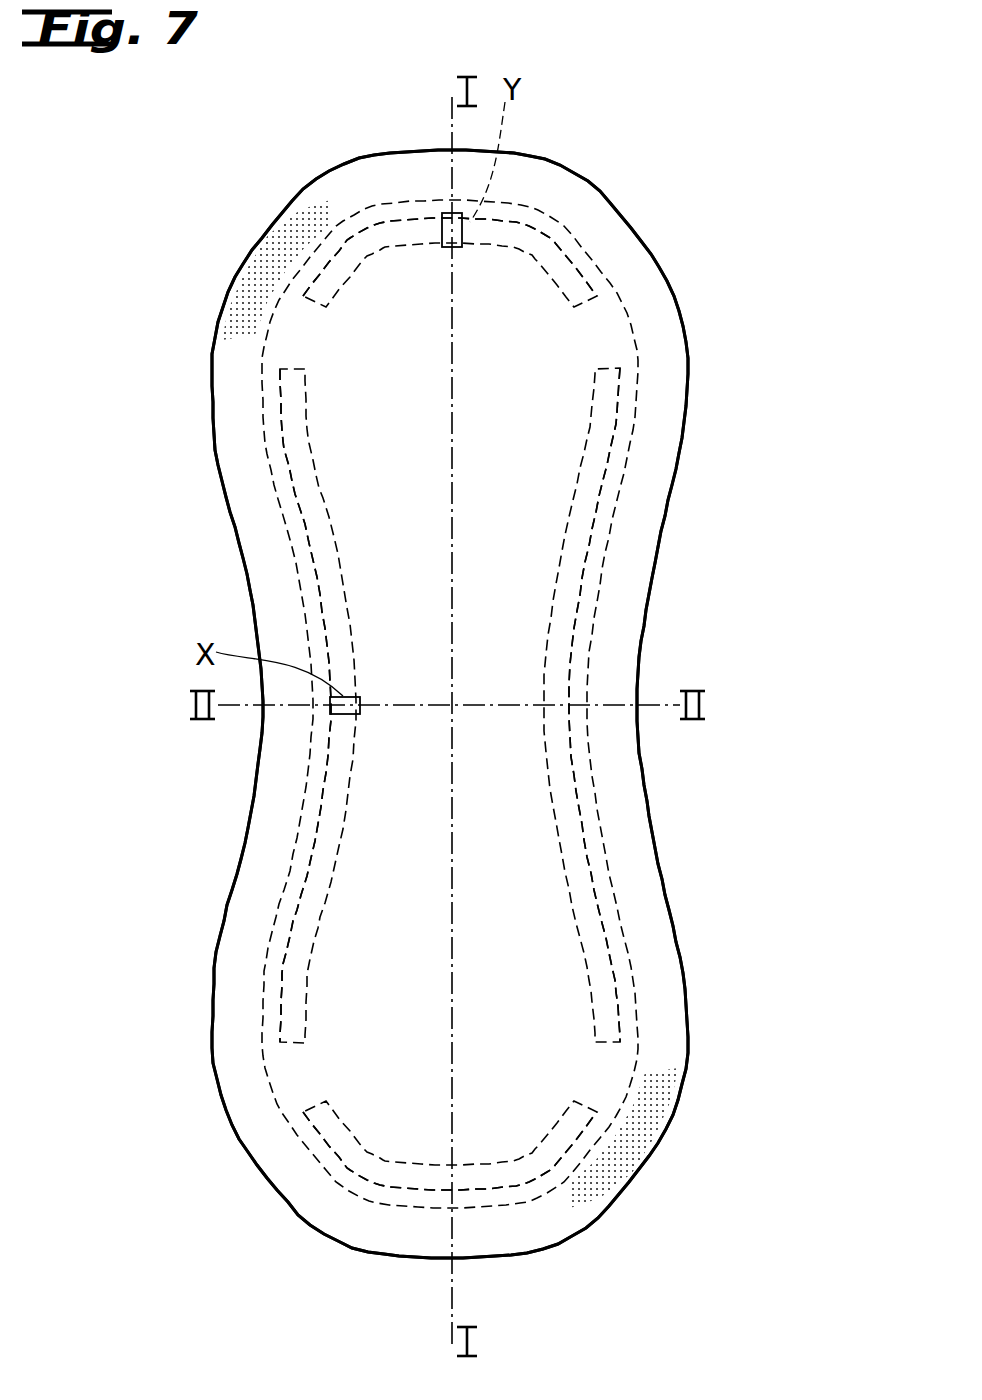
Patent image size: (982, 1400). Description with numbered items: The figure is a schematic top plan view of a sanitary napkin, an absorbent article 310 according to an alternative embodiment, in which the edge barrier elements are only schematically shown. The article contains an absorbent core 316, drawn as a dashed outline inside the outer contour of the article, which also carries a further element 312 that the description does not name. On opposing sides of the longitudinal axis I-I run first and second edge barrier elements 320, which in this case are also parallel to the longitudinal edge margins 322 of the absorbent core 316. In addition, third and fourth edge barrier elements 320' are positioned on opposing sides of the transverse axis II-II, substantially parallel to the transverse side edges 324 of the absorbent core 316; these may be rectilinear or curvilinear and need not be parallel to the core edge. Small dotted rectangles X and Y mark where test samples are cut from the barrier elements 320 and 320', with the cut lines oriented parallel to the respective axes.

The absorbent article 310 is at (683, 135).
The outer edge / topsheet 312 is at (647, 461).
The absorbent core 316 is at (598, 335).
The first and second edge barrier elements 320 is at (458, 705).
The third and fourth edge barrier elements 320' is at (450, 704).
The longitudinal edge margins 322 is at (292, 541).
The transverse side edges 324 is at (400, 203).